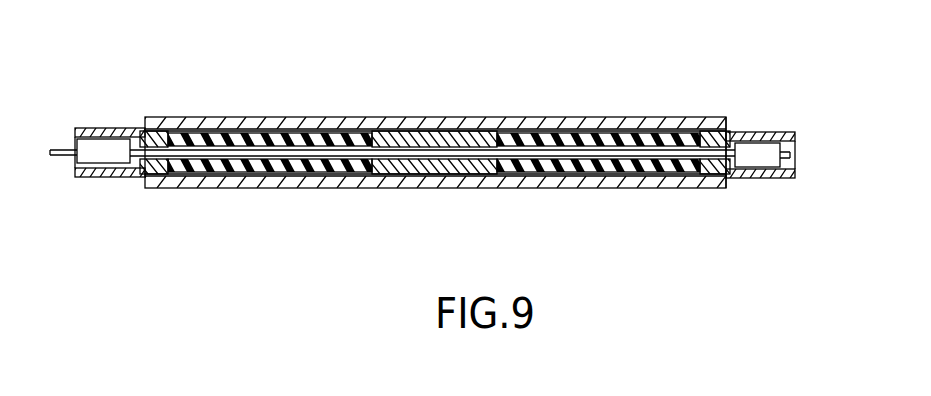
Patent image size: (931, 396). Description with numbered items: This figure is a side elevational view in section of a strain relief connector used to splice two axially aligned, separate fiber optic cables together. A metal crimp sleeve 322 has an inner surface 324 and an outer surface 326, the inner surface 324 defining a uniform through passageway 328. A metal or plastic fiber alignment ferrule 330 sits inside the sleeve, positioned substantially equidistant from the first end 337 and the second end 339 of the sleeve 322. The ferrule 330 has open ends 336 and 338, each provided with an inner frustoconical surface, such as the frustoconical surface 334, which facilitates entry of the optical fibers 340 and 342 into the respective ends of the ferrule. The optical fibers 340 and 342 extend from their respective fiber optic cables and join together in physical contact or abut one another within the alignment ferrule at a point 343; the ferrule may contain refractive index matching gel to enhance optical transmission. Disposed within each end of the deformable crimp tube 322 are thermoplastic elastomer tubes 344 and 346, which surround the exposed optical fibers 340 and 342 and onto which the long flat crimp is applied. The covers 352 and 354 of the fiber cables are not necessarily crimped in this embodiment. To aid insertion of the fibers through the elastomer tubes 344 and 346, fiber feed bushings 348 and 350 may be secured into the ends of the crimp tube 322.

The metal crimp sleeve 322 is at (448, 135).
The inner surface 324 is at (595, 131).
The outer surface 326 is at (503, 118).
The through passageway 328 is at (690, 140).
The fiber alignment ferrule 330 is at (481, 167).
The inner frustoconical surface 334 is at (522, 168).
The open end 336 is at (356, 168).
The first end 337 is at (142, 178).
The open end 338 is at (517, 140).
The second end 339 is at (727, 178).
The optical fiber 340 is at (50, 156).
The optical fiber 342 is at (792, 160).
The point 343 is at (440, 152).
The thermoplastic elastomer tube 344 is at (255, 165).
The thermoplastic elastomer tube 346 is at (627, 167).
The fiber feed bushing 348 is at (115, 128).
The fiber feed bushing 350 is at (768, 132).
The cover 352 is at (100, 165).
The cover 354 is at (747, 168).